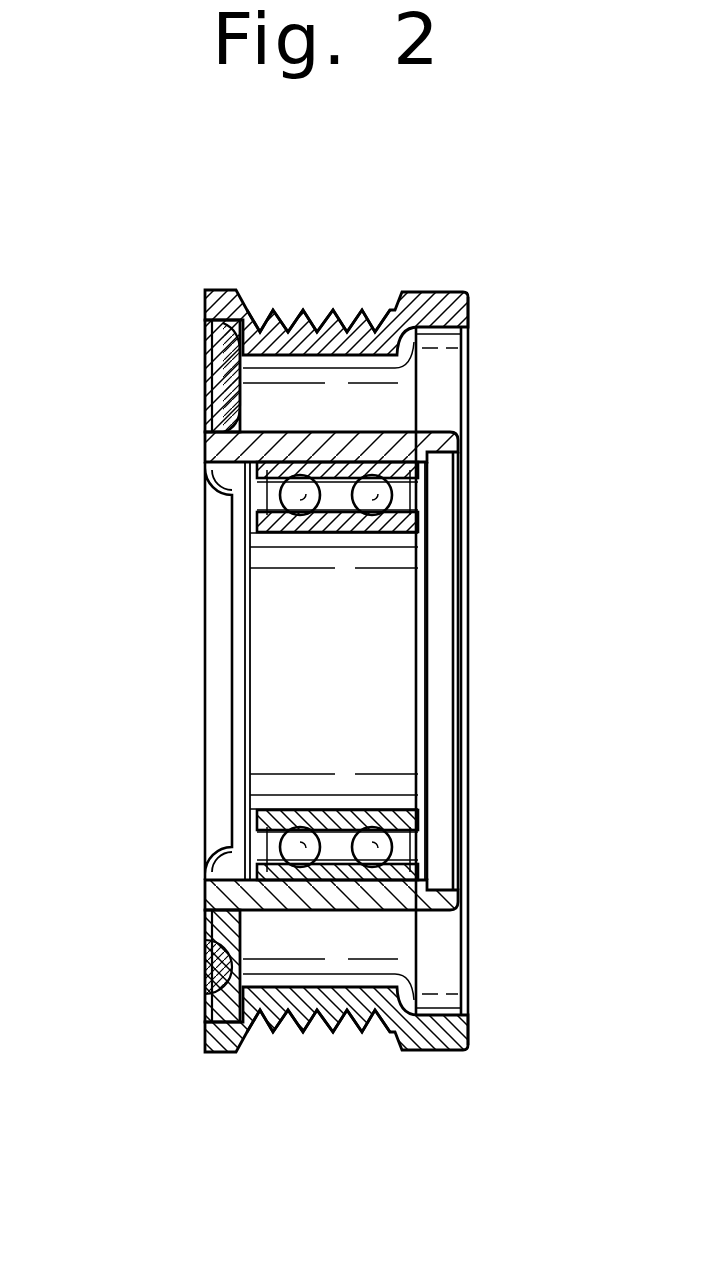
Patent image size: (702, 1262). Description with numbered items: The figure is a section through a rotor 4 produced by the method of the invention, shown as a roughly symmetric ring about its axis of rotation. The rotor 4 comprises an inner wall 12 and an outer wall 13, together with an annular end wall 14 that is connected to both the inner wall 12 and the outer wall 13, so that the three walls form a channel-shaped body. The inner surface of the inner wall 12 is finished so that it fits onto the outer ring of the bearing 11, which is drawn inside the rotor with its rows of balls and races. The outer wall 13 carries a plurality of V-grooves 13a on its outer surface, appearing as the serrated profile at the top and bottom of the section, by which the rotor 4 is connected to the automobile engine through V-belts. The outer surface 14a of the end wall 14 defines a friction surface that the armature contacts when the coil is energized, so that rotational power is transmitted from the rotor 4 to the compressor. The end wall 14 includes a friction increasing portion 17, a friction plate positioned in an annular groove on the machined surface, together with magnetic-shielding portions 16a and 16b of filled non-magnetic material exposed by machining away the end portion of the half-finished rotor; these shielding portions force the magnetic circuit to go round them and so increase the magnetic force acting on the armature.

The rotor 4 is at (163, 224).
The bearing 11 is at (393, 495).
The inner wall 12 is at (357, 443).
The outer wall 13 is at (433, 305).
The V-grooves 13a is at (378, 310).
The annular end wall 14 is at (213, 392).
The outer surface of the end wall 14a is at (205, 383).
The magnetic-shielding portion 16a is at (210, 455).
The magnetic-shielding portion 16b is at (222, 285).
The friction increasing portion 17 is at (212, 335).